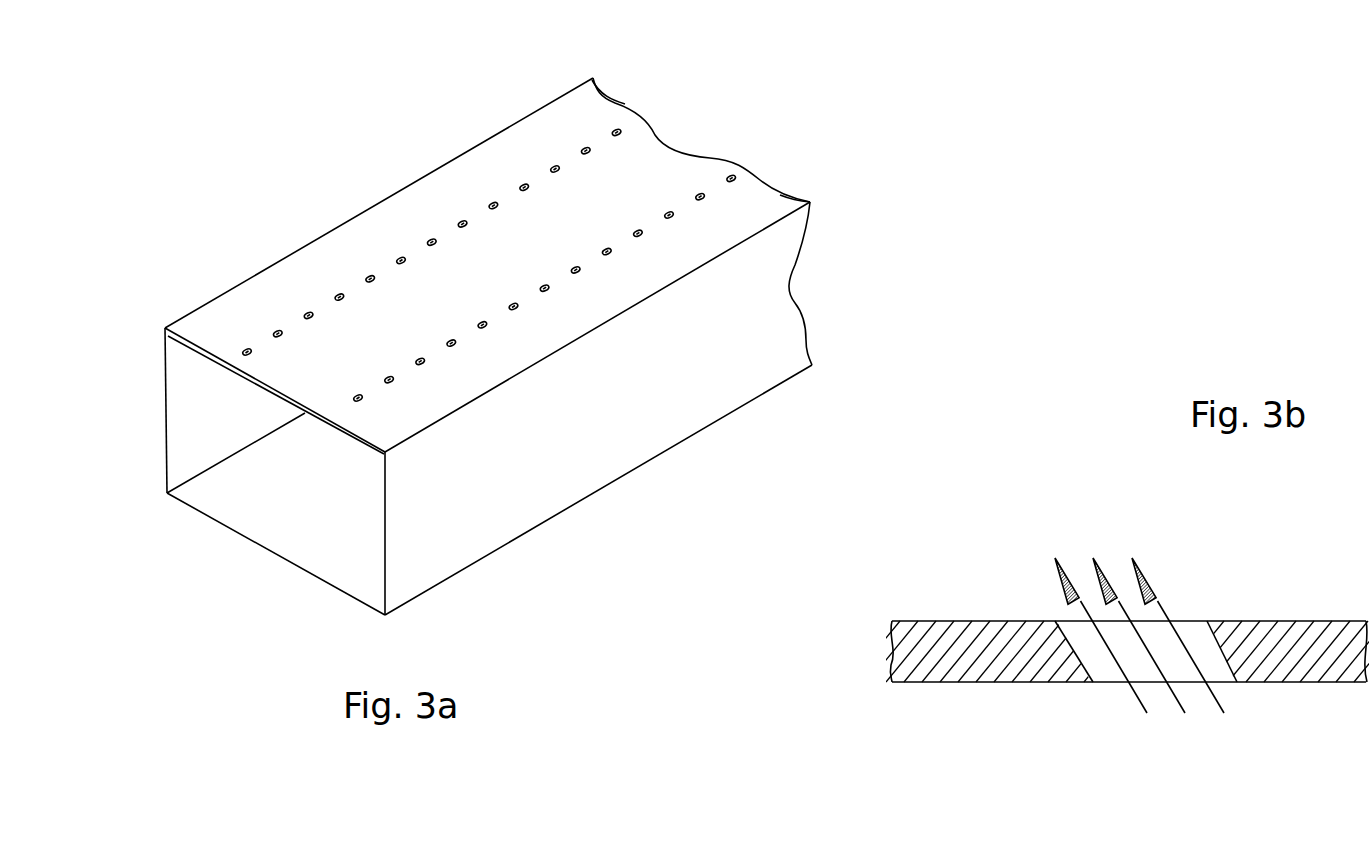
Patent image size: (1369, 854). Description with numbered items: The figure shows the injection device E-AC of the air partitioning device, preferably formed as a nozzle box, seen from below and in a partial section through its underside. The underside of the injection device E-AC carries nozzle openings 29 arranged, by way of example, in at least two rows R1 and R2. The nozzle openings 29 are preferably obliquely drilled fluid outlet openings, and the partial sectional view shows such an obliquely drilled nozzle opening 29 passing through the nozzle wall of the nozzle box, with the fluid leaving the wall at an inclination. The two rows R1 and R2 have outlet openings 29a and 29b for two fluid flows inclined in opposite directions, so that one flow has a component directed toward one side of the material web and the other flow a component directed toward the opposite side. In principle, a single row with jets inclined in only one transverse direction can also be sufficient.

In FIG. 3A, the injection device E-AC is at (447, 127).
In FIG. 3A, the first row R1 is at (770, 163).
In FIG. 3A, the second row R2 is at (652, 113).
In FIG. 3A, the nozzle openings 29 is at (600, 265).
In FIG. 3B, the nozzle openings 29 is at (1195, 637).
In FIG. 3A, the outlet openings 29a is at (577, 272).
In FIG. 3A, the outlet openings 29b is at (463, 217).